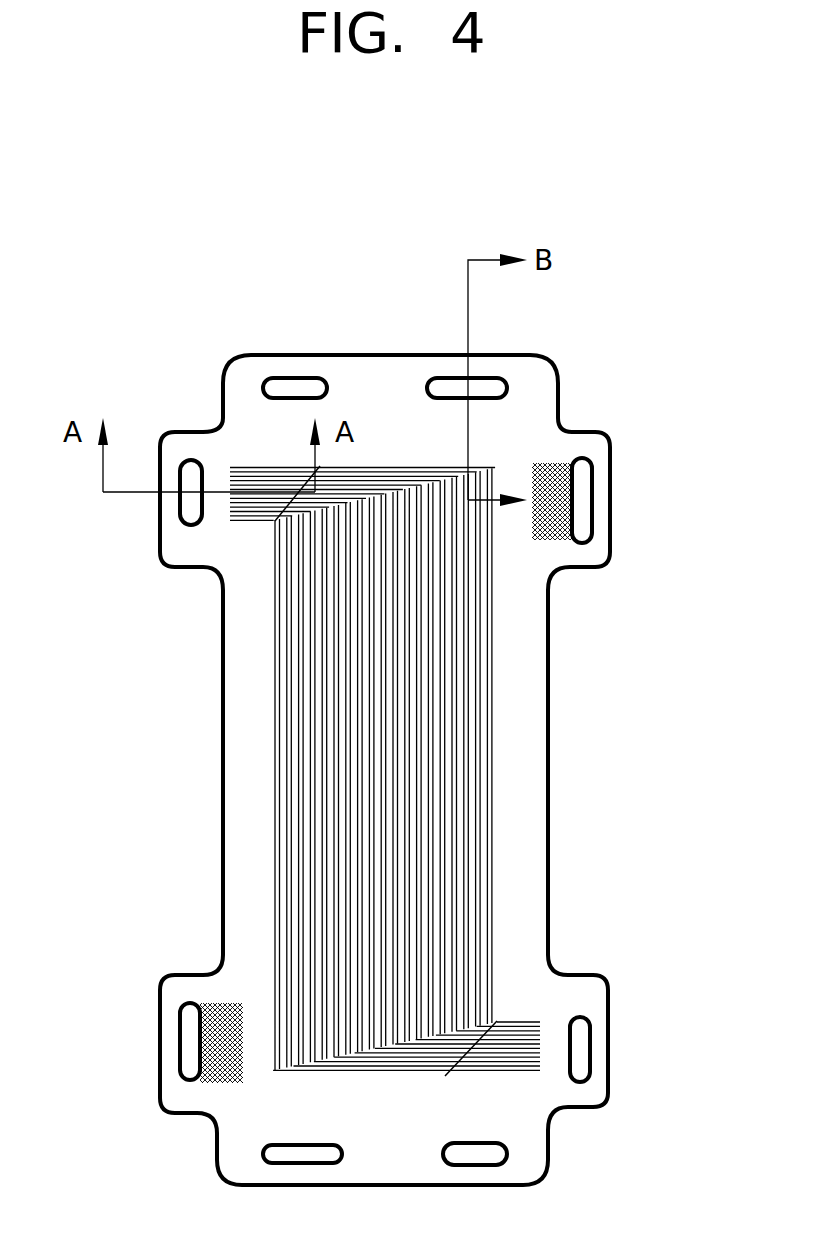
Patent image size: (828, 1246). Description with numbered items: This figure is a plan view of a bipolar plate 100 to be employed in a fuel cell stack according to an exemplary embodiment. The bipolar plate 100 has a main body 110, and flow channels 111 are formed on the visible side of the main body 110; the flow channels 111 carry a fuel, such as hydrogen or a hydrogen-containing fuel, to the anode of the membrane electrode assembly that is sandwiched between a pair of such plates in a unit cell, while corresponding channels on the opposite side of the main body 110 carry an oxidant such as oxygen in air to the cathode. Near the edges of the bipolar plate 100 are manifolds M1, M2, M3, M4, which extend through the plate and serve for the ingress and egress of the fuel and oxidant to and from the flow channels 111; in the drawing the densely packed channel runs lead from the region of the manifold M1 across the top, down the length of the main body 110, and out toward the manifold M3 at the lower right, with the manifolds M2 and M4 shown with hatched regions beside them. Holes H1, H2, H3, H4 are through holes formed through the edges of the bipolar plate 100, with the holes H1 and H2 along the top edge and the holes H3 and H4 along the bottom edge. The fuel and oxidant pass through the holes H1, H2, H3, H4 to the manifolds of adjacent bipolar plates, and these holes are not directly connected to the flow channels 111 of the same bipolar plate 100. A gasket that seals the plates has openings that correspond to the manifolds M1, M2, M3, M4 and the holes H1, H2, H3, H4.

The bipolar plate 100 is at (365, 770).
The main body 110 is at (548, 772).
The flow channels 111 is at (460, 680).
The hole H1 is at (297, 387).
The hole H2 is at (492, 388).
The hole H3 is at (495, 1153).
The hole H4 is at (275, 1150).
The manifold M1 is at (193, 470).
The manifold M2 is at (585, 500).
The manifold M3 is at (582, 1053).
The manifold M4 is at (190, 1017).